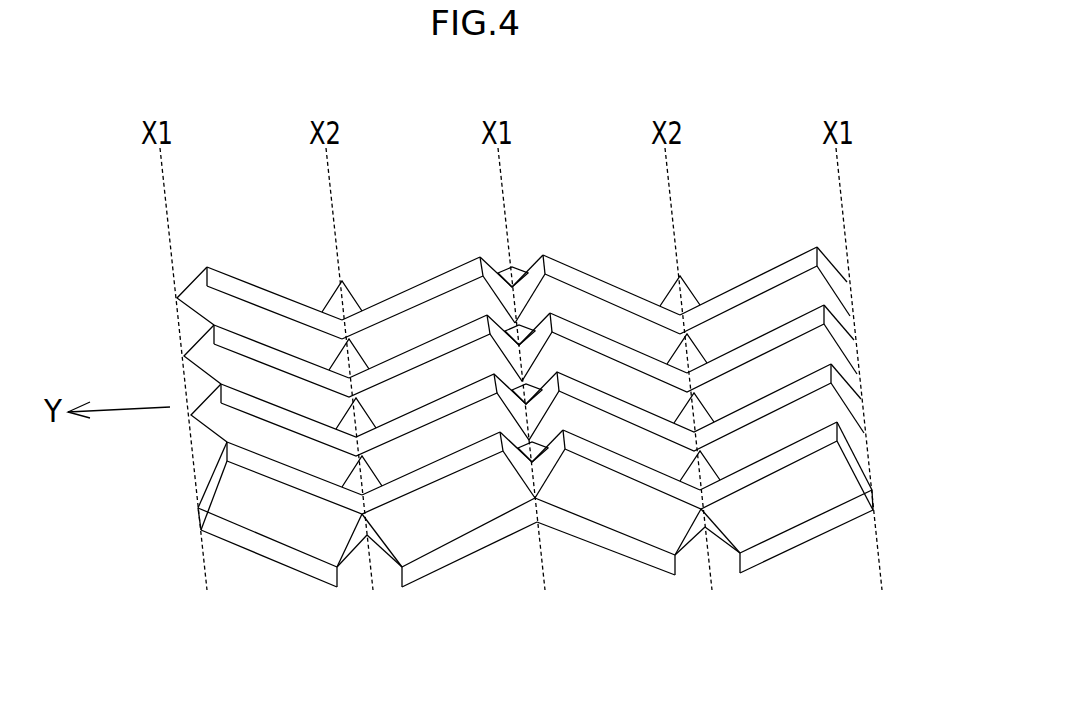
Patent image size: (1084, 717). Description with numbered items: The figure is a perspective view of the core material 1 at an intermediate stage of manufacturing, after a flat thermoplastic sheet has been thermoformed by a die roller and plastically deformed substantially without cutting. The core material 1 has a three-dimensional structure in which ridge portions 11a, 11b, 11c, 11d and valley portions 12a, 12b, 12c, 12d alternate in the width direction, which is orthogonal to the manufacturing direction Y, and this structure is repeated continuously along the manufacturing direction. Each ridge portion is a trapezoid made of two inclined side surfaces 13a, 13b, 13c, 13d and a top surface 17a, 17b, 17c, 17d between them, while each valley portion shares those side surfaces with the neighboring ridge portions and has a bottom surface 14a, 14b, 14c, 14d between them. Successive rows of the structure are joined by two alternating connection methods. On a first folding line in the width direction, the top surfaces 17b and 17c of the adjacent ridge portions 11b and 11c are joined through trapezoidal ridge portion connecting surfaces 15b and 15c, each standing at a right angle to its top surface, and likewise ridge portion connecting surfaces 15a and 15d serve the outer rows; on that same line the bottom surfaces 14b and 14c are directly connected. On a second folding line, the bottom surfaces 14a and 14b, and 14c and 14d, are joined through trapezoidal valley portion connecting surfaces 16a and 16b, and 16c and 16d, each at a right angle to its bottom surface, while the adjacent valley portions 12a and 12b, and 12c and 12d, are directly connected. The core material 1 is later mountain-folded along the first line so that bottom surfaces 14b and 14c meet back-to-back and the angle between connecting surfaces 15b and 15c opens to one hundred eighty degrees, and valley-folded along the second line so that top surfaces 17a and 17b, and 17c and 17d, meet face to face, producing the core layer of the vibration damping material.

The core material 1 is at (716, 170).
The ridge portion 11a is at (177, 310).
The ridge portion 11b is at (530, 528).
The ridge portion 11c is at (548, 527).
The ridge portion 11d is at (853, 282).
The valley portion 12a is at (183, 338).
The valley portion 12b is at (395, 345).
The valley portion 12c is at (582, 310).
The valley portion 12d is at (772, 320).
The side surface 13a is at (237, 510).
The side surface 13b is at (490, 507).
The side surface 13c is at (598, 507).
The side surface 13d is at (816, 498).
The bottom surface 14a is at (290, 553).
The bottom surface 14b is at (443, 517).
The bottom surface 14c is at (647, 517).
The bottom surface 14d is at (778, 543).
The ridge portion connecting surface 15a is at (195, 490).
The ridge portion connecting surface 15b is at (510, 268).
The ridge portion connecting surface 15c is at (528, 268).
The ridge portion connecting surface 15d is at (858, 440).
The valley portion connecting surface 16a is at (337, 590).
The valley portion connecting surface 16b is at (402, 590).
The valley portion connecting surface 16c is at (676, 583).
The valley portion connecting surface 16d is at (740, 583).
The top surface 17a is at (263, 293).
The top surface 17b is at (410, 300).
The top surface 17c is at (608, 292).
The top surface 17d is at (748, 287).